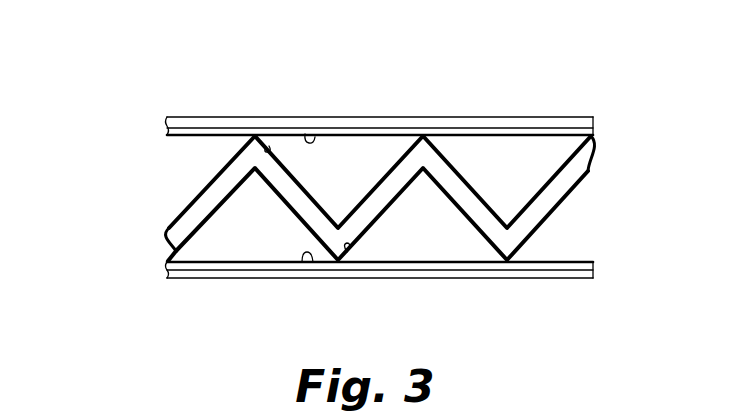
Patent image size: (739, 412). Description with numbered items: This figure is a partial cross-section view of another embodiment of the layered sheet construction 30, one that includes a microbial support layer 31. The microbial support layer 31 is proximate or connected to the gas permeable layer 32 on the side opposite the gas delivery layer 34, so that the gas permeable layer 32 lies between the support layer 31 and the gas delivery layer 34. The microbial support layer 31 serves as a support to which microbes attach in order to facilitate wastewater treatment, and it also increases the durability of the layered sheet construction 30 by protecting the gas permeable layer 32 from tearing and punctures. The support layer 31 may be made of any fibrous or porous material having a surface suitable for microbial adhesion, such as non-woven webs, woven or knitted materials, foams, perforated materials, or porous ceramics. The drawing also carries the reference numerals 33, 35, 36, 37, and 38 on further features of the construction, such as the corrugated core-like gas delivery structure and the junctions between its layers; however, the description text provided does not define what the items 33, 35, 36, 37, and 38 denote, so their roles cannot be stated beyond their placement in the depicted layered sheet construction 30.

The layered sheet construction 30 is at (130, 75).
The microbial support layer 31 is at (385, 199).
The gas permeable layer 32 is at (463, 118).
The corrugated core 33 is at (170, 205).
The gas delivery layer 34 is at (315, 137).
The core web 35 is at (377, 182).
The open channel 36 is at (508, 165).
The inclined wall 37 is at (208, 171).
The apex bond 38 is at (266, 147).